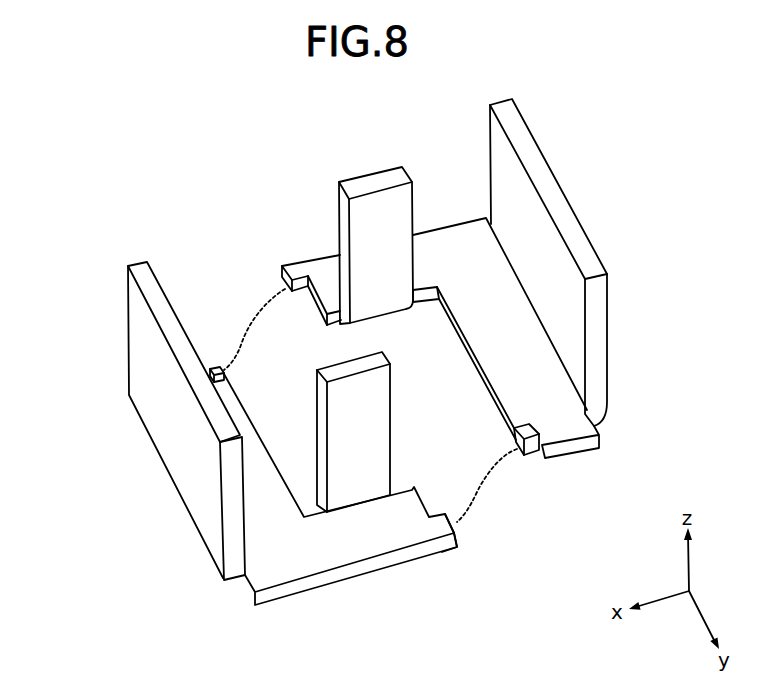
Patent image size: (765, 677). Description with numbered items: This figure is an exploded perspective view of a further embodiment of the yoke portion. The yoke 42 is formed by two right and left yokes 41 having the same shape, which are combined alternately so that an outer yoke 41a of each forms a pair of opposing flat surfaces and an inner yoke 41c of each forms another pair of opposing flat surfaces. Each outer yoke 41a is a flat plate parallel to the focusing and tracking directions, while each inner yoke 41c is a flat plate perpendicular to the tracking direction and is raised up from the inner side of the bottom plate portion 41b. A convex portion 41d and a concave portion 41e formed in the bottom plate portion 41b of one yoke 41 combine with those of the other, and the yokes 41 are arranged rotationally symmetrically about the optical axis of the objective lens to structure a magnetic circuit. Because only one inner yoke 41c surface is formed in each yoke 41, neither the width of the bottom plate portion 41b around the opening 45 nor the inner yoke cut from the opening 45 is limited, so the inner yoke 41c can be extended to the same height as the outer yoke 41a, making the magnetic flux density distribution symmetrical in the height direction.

The yoke 42 is at (445, 156).
The yoke 41 is at (633, 303).
The outer yoke 41a is at (158, 430).
The bottom plate portion 41b is at (273, 533).
The inner yoke 41c is at (376, 207).
The convex portion 41d is at (292, 270).
The concave portion 41e is at (212, 365).
The opening 45 is at (443, 397).